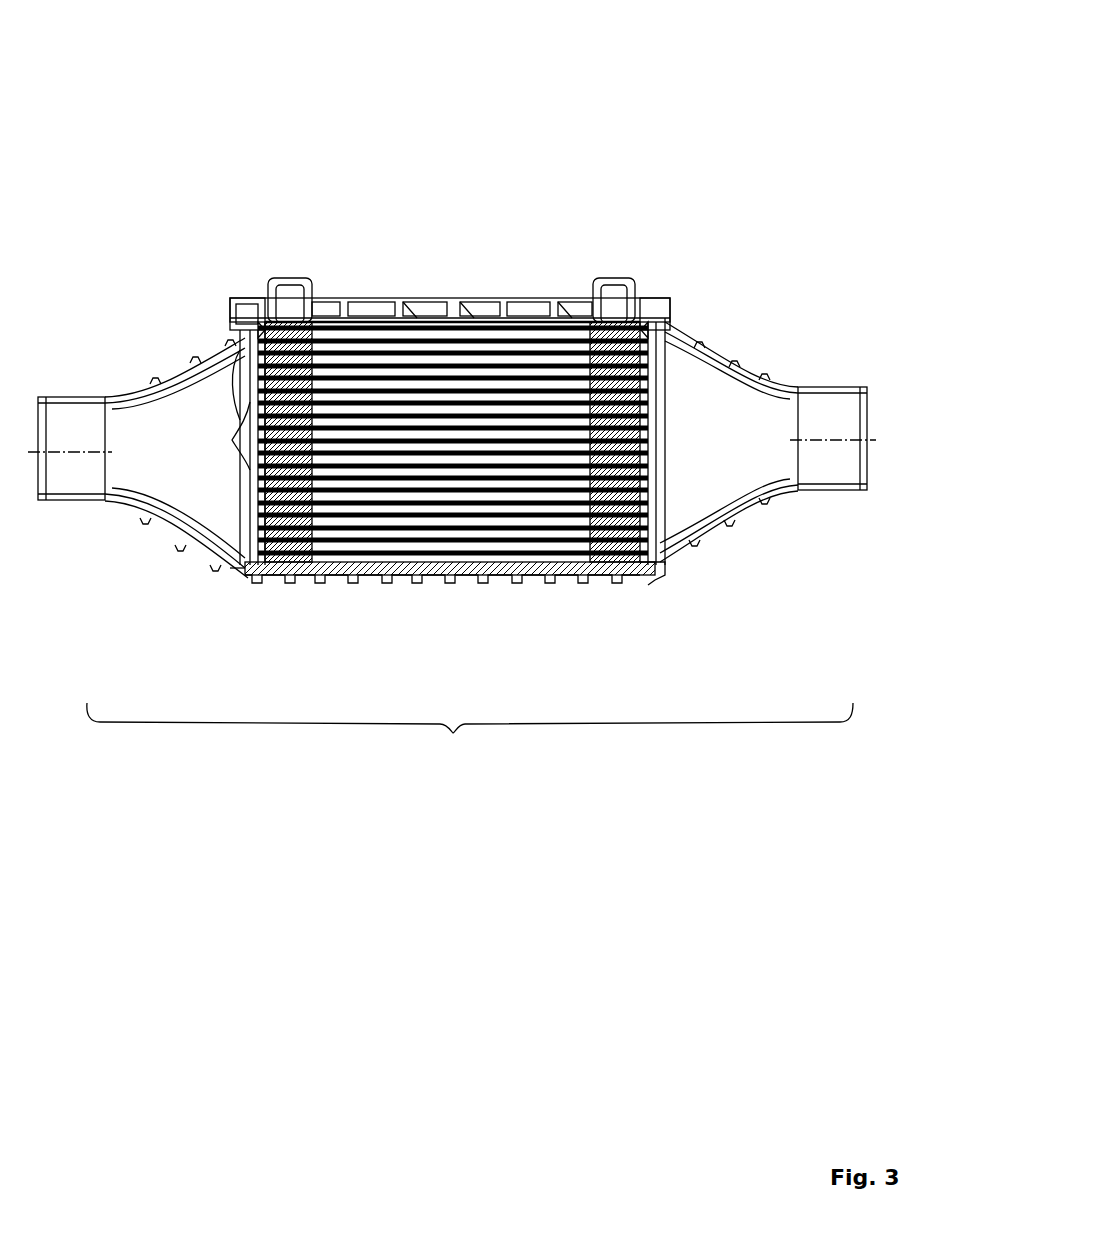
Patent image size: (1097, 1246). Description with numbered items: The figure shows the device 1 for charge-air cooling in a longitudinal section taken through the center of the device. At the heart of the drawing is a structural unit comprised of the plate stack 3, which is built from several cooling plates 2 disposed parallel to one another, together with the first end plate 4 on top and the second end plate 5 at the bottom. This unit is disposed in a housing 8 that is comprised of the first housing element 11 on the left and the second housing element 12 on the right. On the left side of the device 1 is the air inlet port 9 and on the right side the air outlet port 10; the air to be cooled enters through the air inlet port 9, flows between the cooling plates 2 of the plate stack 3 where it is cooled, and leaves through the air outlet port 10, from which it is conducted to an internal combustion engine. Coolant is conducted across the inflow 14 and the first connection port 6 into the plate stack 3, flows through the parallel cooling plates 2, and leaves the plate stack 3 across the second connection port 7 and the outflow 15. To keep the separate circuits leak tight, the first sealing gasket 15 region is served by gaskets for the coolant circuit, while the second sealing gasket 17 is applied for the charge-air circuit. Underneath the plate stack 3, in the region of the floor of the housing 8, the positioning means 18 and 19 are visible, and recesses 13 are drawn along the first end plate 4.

The device 1 is at (683, 134).
The cooling plates 2 is at (645, 365).
The plate stack 3 is at (240, 443).
The first end plate 4 is at (455, 290).
The second end plate 5 is at (423, 566).
The first connection port 6 is at (318, 290).
The second connection port 7 is at (612, 320).
The housing 8 is at (470, 747).
The air inlet port 9 is at (75, 430).
The air outlet port 10 is at (832, 420).
The first housing element 11 is at (152, 535).
The second housing element 12 is at (745, 525).
The cover plate recesses 13 is at (400, 290).
The inflow 14 is at (286, 290).
The outflow 15 is at (617, 316).
The second sealing gasket 17 is at (230, 330).
The positioning means 18 is at (518, 575).
The positioning means 19 is at (645, 575).